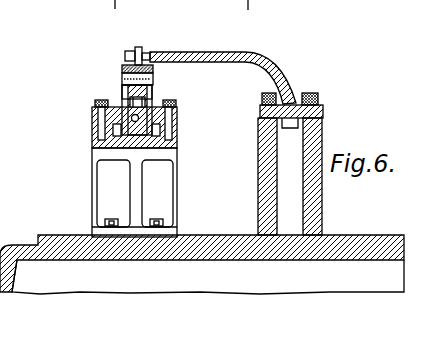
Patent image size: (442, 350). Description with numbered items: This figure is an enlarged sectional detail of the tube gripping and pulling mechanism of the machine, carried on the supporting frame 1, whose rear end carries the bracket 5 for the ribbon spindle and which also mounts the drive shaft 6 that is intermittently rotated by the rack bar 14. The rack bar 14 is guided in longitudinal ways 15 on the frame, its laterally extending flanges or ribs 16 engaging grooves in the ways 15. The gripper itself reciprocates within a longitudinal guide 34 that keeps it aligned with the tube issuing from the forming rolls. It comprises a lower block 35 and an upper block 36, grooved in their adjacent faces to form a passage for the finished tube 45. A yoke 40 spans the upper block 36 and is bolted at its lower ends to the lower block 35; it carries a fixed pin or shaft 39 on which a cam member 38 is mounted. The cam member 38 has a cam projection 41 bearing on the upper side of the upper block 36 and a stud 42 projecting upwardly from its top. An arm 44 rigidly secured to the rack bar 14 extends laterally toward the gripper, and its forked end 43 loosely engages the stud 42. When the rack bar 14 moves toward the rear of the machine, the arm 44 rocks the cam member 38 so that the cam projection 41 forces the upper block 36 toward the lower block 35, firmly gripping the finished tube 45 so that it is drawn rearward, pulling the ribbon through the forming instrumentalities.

The supporting frame 1 is at (207, 236).
The bracket 5 is at (115, 15).
The drive shaft 6 is at (247, 14).
The rack bar 14 is at (290, 129).
The ways 15 is at (258, 128).
The flanges or ribs 16 is at (263, 110).
The longitudinal guide 34 is at (100, 126).
The lower block 35 is at (132, 146).
The upper block 36 is at (151, 110).
The cam member 38 is at (124, 67).
The fixed pin or shaft 39 is at (122, 78).
The yoke 40 is at (122, 93).
The cam projection 41 is at (146, 100).
The stud 42 is at (136, 48).
The forked end 43 is at (156, 52).
The arm 44 is at (269, 60).
The finished tube 45 is at (99, 117).